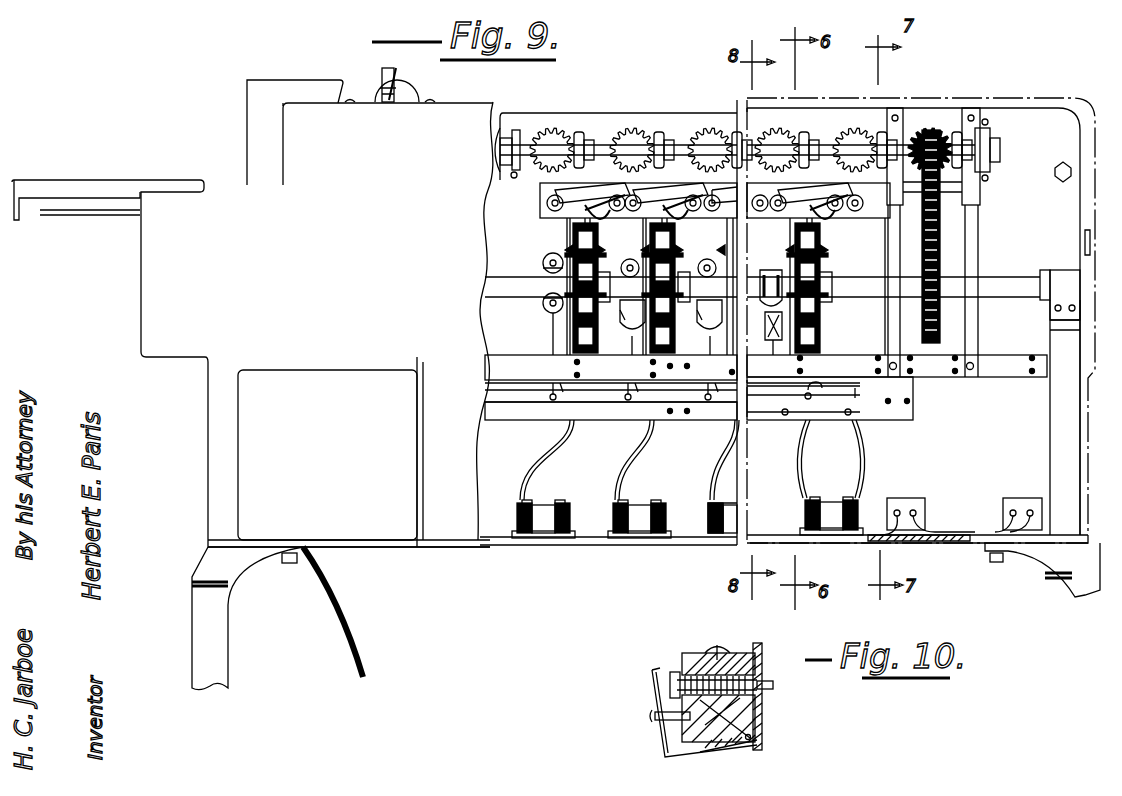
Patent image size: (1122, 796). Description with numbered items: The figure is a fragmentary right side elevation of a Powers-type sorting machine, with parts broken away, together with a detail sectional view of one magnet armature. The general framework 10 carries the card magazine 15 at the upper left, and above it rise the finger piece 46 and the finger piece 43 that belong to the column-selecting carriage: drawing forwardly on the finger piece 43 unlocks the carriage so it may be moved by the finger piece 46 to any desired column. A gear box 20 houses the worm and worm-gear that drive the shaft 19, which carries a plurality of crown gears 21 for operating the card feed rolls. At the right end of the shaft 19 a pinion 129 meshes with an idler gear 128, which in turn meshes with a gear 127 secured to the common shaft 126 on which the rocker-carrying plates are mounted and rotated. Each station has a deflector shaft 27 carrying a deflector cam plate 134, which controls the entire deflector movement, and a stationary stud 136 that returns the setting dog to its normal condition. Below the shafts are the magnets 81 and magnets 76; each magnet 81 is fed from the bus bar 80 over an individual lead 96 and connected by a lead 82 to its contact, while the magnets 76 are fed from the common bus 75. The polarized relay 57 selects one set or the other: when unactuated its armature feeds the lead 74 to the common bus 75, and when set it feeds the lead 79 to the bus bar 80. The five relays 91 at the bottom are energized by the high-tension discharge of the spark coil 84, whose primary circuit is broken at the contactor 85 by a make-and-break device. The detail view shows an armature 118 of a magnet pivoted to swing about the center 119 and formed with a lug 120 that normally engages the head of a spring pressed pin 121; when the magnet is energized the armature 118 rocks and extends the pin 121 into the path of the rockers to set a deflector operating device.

In FIG. 9, the framework 10 is at (213, 612).
In FIG. 9, the card magazine 15 is at (262, 85).
In FIG. 9, the finger piece 46 is at (380, 88).
In FIG. 9, the finger piece 43 is at (398, 76).
In FIG. 9, the gear box 20 is at (492, 150).
In FIG. 9, the shaft 19 is at (596, 145).
In FIG. 9, the crown gears 21 is at (660, 140).
In FIG. 9, the pinion 129 is at (935, 135).
In FIG. 9, the idler gear 128 is at (942, 205).
In FIG. 9, the gear 127 is at (942, 240).
In FIG. 9, the common shaft 126 is at (1000, 277).
In FIG. 9, the deflector shaft 27 is at (625, 215).
In FIG. 9, the deflector cam plate 134 is at (672, 225).
In FIG. 9, the stationary stud 136 is at (812, 245).
In FIG. 9, the magnets 81 is at (543, 265).
In FIG. 9, the individual lead 96 is at (553, 342).
In FIG. 9, the magnets 76 is at (766, 272).
In FIG. 9, the armature 118 is at (778, 325).
In FIG. 10, the armature 118 is at (700, 755).
In FIG. 9, the common bus 75 is at (865, 412).
In FIG. 9, the bus bar 80 is at (520, 402).
In FIG. 9, the lead 82 is at (523, 480).
In FIG. 9, the relays 91 is at (545, 503).
In FIG. 9, the polarized relay 57 is at (833, 499).
In FIG. 9, the lead 79 is at (803, 445).
In FIG. 9, the lead 74 is at (862, 468).
In FIG. 9, the contactor 85 is at (912, 499).
In FIG. 9, the spark coil 84 is at (1014, 499).
In FIG. 10, the center 119 is at (762, 726).
In FIG. 10, the spring pressed pin 121 is at (676, 680).
In FIG. 10, the lug 120 is at (660, 698).